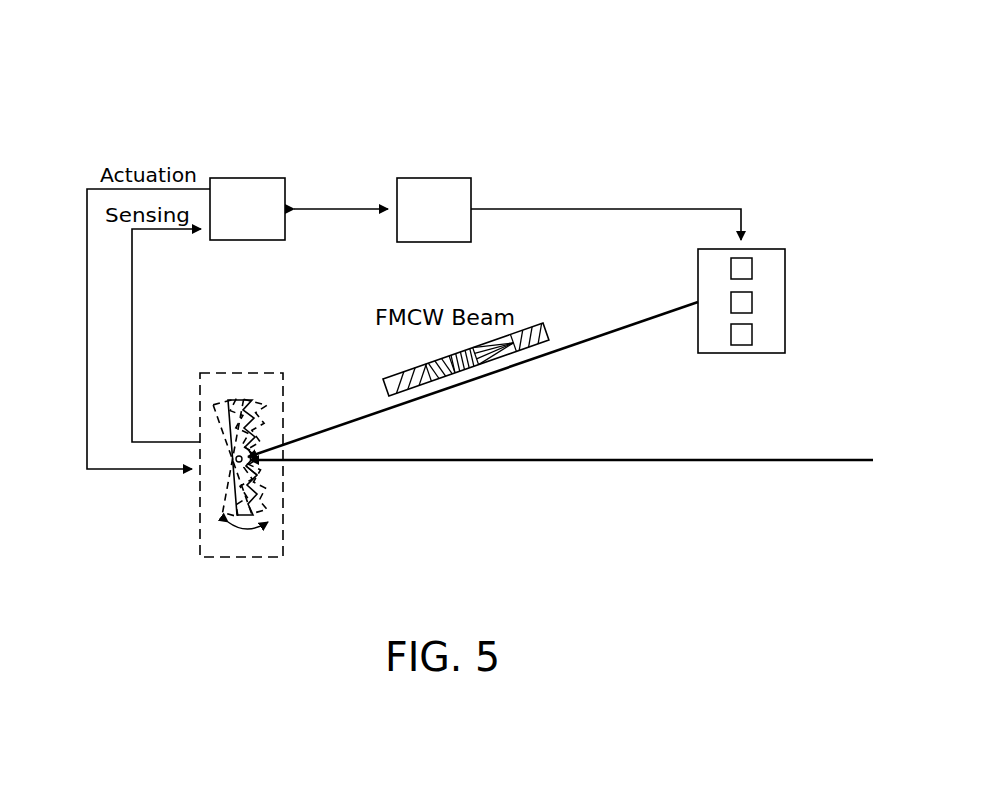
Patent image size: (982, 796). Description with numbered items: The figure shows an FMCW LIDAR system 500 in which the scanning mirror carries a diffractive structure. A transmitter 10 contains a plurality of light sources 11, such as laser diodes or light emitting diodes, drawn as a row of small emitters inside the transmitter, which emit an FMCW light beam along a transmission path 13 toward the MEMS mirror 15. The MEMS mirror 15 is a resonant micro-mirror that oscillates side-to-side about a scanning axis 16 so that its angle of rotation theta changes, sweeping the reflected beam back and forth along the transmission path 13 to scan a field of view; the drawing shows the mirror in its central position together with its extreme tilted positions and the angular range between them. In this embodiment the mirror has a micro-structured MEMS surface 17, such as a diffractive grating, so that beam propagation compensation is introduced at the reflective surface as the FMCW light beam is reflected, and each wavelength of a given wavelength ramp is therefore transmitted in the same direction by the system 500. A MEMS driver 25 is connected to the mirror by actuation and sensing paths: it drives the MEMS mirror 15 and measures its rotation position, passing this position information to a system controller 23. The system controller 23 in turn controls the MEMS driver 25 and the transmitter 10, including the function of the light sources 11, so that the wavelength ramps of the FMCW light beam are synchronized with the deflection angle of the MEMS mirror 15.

The FMCW LIDAR system 500 is at (152, 54).
The MEMS driver 25 is at (252, 178).
The system controller 23 is at (434, 178).
The transmitter 10 is at (770, 249).
The light sources 11 is at (752, 268).
The transmission path 13 is at (592, 350).
The MEMS mirror 15 is at (237, 400).
The scanning axis 16 is at (236, 462).
The micro-structured MEMS surface 17 is at (262, 467).